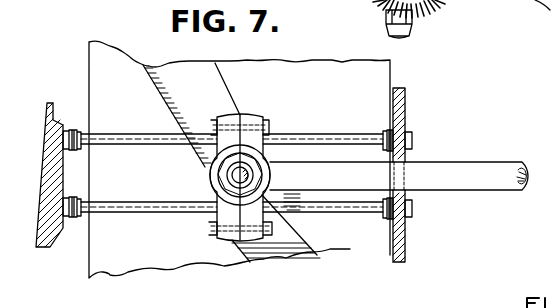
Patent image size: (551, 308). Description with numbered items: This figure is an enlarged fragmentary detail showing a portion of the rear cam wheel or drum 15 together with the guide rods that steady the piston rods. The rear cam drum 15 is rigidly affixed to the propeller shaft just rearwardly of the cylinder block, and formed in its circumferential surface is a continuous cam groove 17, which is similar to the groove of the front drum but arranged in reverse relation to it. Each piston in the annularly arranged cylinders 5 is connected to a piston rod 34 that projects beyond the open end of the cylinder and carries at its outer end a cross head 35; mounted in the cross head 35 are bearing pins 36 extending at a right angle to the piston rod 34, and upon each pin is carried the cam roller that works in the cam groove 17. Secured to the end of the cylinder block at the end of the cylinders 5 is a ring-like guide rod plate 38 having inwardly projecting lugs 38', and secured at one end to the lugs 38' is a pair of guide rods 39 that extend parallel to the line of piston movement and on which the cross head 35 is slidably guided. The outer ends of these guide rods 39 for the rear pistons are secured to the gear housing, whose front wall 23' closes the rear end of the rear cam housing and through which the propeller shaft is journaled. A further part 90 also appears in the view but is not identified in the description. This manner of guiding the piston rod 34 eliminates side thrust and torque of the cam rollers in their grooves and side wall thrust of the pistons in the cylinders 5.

The cylinders 5 is at (459, 0).
The bracket 90 is at (398, 28).
The rear cam wheel or drum 15 is at (343, 248).
The cam groove 17 is at (183, 78).
The front wall 23' is at (48, 166).
The guide rods 39 is at (136, 203).
The cross head 35 is at (226, 218).
The bearing pins 36 is at (246, 167).
The piston rod 34 is at (453, 184).
The guide rod plate 38 is at (415, 175).
The lugs 38' is at (432, 166).